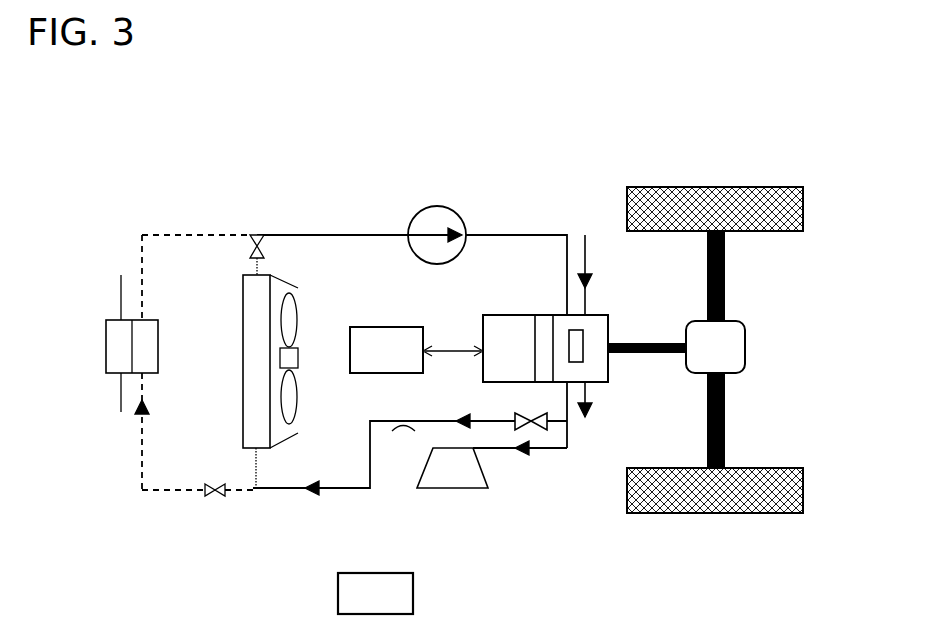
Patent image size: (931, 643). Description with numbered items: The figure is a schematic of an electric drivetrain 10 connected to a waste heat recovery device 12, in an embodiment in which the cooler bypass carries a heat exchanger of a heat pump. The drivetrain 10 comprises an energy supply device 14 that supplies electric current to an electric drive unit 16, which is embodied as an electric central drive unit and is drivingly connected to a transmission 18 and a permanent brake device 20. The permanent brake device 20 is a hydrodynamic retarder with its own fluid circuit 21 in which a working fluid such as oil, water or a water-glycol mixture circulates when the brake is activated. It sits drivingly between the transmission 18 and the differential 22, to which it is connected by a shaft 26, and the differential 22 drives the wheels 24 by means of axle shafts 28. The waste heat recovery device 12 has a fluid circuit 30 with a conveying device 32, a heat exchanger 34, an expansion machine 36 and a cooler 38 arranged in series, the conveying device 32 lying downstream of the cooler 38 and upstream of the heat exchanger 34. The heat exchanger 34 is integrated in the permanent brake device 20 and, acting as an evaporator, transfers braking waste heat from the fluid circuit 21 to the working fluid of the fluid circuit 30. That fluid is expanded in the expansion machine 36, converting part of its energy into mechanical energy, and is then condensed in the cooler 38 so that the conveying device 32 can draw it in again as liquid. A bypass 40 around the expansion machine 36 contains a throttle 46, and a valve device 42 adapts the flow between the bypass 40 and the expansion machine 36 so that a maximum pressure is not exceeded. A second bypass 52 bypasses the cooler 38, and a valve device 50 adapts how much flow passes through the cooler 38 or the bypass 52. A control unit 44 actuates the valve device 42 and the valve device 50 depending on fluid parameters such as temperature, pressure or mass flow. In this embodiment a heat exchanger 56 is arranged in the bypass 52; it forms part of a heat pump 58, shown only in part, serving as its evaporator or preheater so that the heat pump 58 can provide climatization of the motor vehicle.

The electric drivetrain 10 is at (782, 337).
The waste heat recovery device 12 is at (538, 548).
The energy supply device 14 is at (378, 327).
The electric drive unit 16 is at (490, 315).
The transmission 18 is at (542, 315).
The permanent brake device 20 is at (603, 318).
The fluid circuit 21 is at (583, 272).
The differential 22 is at (745, 362).
The wheels 24 is at (655, 187).
The shaft 26 is at (667, 355).
The axle shafts 28 is at (725, 280).
The fluid circuit 30 is at (330, 235).
The conveying device 32 is at (430, 207).
The heat exchanger 34 is at (585, 345).
The expansion machine 36 is at (480, 468).
The cooler 38 is at (243, 320).
The bypass 40 is at (370, 470).
The valve device 42 is at (515, 418).
The control unit 44 is at (413, 590).
The throttle 46 is at (415, 412).
The valve device 50 is at (245, 241).
The bypass 52 is at (142, 463).
The heat exchanger 56 is at (108, 375).
The heat pump 58 is at (105, 267).